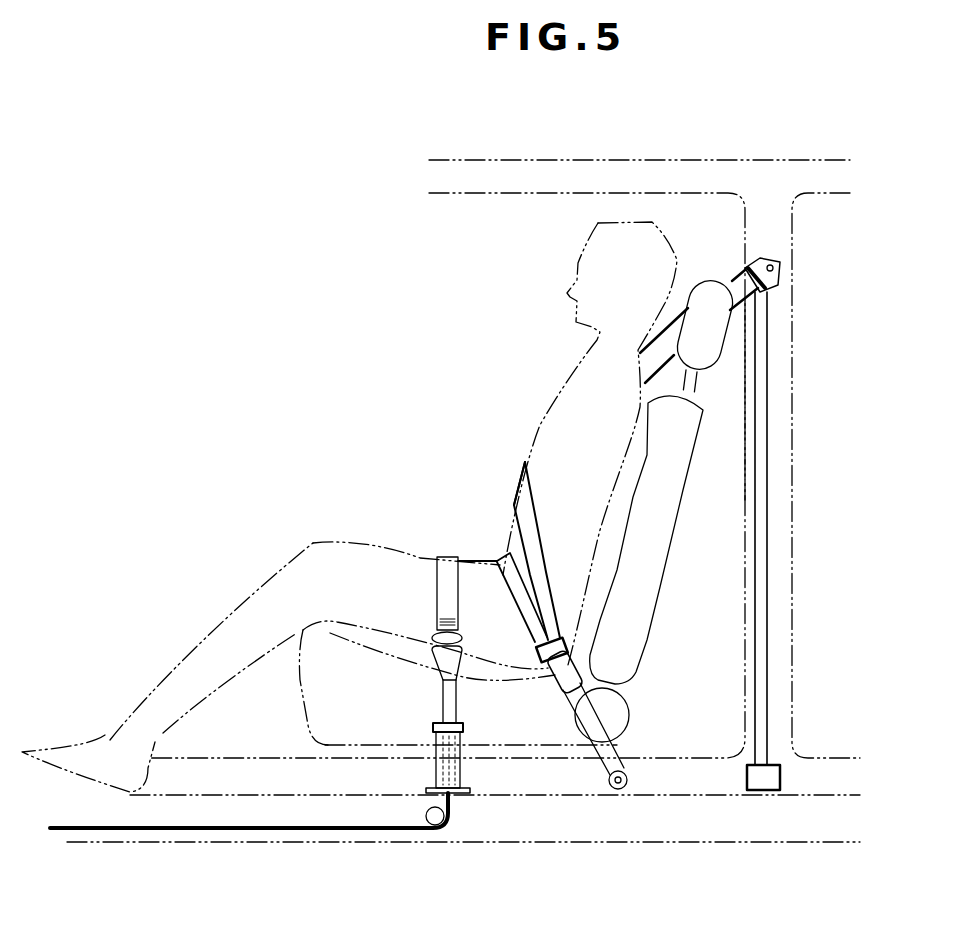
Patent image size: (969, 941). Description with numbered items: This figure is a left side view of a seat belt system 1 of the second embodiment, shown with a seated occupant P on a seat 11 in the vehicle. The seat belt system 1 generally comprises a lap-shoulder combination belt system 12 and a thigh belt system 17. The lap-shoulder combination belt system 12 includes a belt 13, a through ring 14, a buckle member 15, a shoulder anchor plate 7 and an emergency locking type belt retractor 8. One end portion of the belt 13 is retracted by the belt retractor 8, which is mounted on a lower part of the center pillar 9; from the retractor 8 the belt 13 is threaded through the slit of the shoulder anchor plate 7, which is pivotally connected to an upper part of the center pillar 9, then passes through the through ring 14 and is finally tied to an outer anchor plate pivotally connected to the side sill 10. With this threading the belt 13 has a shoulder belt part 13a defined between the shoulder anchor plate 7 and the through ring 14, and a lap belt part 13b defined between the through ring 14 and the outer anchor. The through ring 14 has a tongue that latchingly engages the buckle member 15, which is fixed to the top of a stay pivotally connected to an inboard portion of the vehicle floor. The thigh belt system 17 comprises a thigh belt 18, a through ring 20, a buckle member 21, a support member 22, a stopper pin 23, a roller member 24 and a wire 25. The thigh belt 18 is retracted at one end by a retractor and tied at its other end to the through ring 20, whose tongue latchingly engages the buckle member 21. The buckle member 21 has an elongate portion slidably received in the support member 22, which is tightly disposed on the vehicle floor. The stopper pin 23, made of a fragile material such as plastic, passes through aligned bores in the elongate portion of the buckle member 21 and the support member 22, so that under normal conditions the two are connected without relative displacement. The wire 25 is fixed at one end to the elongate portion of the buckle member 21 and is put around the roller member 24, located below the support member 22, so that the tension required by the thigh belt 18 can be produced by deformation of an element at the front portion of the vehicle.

The seat belt system 1 is at (747, 520).
The shoulder anchor plate 7 is at (764, 260).
The emergency locking type belt retractor 8 is at (762, 790).
The center pillar 9 is at (742, 647).
The side sill 10 is at (669, 832).
The seat 11 is at (310, 696).
The lap-shoulder combination belt system 12 is at (540, 520).
The belt 13 is at (753, 464).
The shoulder belt part 13a is at (523, 467).
The lap belt part 13b is at (508, 553).
The through ring 14 is at (566, 638).
The buckle member 15 is at (552, 688).
The thigh belt system 17 is at (447, 639).
The thigh belt 18 is at (448, 557).
The through ring 20 is at (433, 637).
The buckle member 21 is at (443, 667).
The support member 22 is at (462, 777).
The stopper pin 23 is at (463, 727).
The roller member 24 is at (433, 837).
The wire 25 is at (283, 832).
The occupant P is at (575, 367).